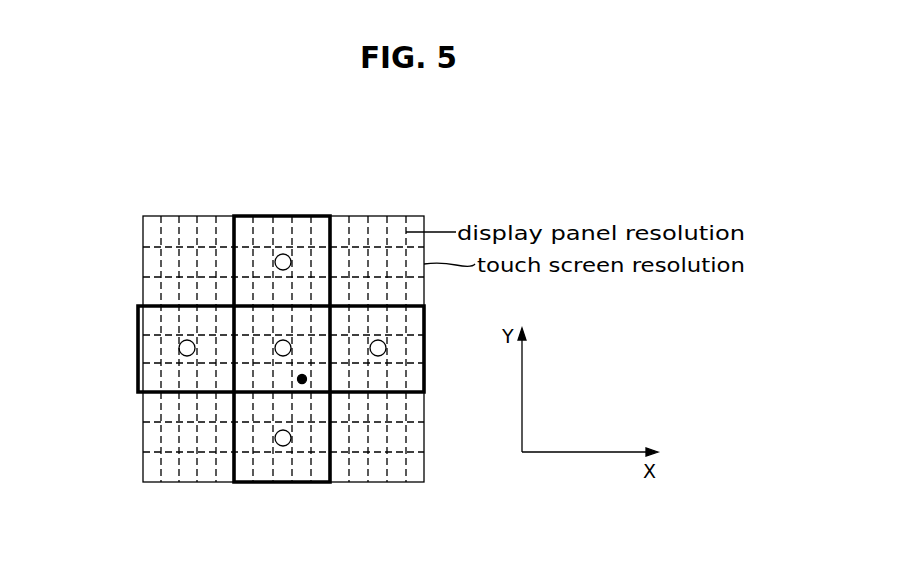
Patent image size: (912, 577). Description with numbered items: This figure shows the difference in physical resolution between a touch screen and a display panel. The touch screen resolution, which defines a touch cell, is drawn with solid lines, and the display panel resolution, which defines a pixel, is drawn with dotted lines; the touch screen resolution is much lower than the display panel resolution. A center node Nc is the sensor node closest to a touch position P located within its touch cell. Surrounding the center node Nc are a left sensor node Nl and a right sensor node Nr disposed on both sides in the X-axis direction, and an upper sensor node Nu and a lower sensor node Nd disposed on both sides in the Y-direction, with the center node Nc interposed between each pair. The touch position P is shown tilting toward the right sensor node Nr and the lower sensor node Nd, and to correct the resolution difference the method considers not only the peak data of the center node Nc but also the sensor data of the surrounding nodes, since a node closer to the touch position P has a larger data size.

The upper sensor node Nu is at (283, 254).
The left sensor node Nl is at (179, 348).
The center node Nc is at (277, 354).
The right sensor node Nr is at (386, 347).
The lower sensor node Nd is at (288, 445).
The touch position P is at (306, 379).